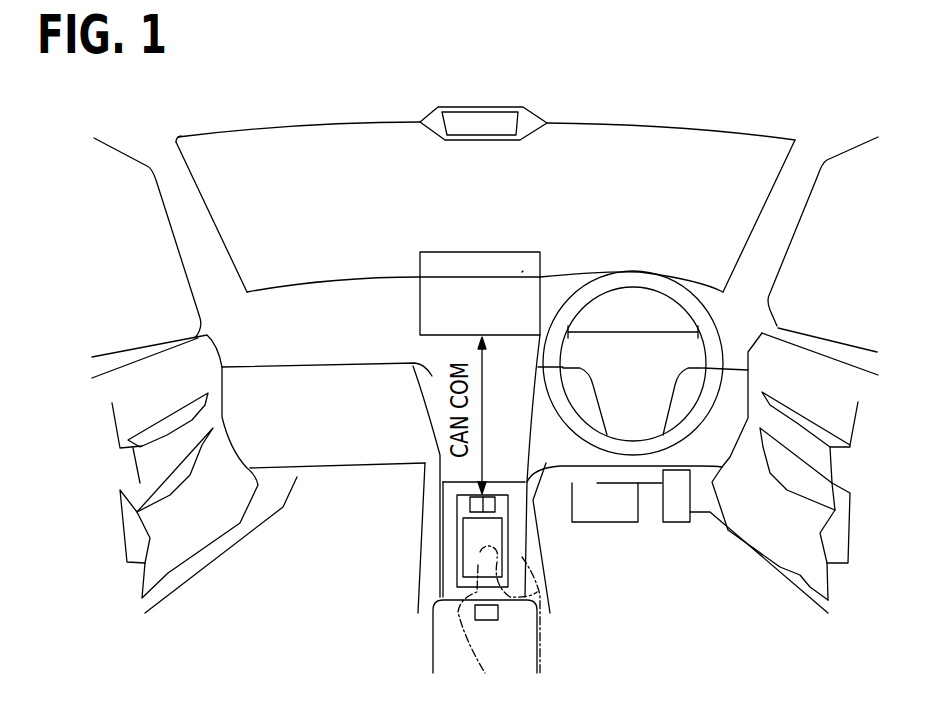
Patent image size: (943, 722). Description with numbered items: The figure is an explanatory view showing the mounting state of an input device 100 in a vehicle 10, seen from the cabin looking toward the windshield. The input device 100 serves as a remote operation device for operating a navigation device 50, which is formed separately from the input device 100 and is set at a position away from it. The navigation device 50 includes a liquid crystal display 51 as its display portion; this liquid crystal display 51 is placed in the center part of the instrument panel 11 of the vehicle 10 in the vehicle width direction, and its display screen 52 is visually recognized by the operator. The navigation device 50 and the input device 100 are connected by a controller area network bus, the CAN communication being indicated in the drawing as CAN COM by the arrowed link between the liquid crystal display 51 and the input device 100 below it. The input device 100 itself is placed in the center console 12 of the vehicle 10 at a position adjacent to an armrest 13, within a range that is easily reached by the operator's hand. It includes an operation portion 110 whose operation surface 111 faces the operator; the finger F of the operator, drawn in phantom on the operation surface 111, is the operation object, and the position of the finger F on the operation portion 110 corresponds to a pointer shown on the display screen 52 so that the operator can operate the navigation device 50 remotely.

The vehicle 10 is at (167, 310).
The instrument panel 11 is at (325, 328).
The center console 12 is at (535, 537).
The armrest 13 is at (437, 619).
The navigation device 50 is at (438, 245).
The liquid crystal display 51 is at (480, 252).
The display screen 52 is at (522, 272).
The input device 100 is at (418, 487).
The operation portion 110 is at (447, 508).
The operation surface 111 is at (473, 540).
The finger F is at (540, 580).